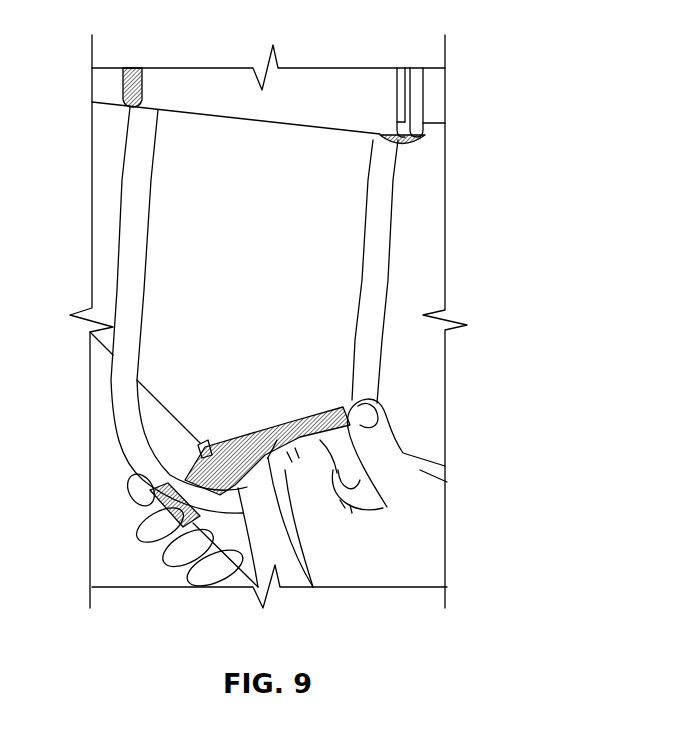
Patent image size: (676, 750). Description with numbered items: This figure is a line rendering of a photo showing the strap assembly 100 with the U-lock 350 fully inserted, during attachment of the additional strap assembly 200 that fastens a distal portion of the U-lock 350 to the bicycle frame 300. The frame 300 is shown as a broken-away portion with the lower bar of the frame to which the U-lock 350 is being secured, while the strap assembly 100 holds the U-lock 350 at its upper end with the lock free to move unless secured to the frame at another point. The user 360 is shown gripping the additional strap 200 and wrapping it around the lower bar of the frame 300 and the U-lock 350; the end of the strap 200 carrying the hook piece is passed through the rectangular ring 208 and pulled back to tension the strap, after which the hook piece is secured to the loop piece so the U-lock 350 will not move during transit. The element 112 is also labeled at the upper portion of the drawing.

The strap assembly 100 is at (246, 130).
The mounting bracket 112 is at (400, 146).
The additional strap assembly 200 is at (310, 413).
The rectangular ring 208 is at (207, 447).
The bicycle frame 300 is at (437, 101).
The U-lock 350 is at (390, 268).
The user 360 is at (382, 564).